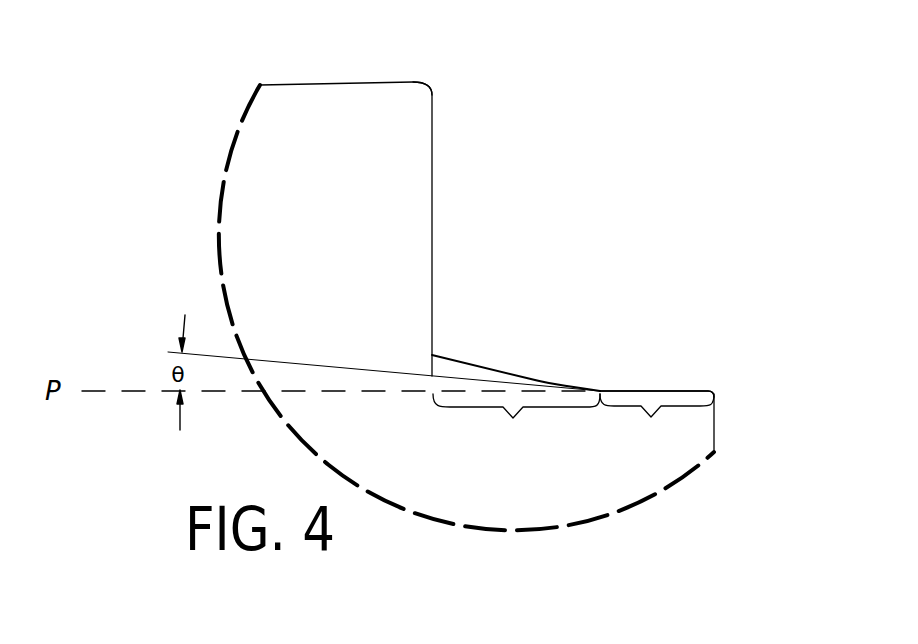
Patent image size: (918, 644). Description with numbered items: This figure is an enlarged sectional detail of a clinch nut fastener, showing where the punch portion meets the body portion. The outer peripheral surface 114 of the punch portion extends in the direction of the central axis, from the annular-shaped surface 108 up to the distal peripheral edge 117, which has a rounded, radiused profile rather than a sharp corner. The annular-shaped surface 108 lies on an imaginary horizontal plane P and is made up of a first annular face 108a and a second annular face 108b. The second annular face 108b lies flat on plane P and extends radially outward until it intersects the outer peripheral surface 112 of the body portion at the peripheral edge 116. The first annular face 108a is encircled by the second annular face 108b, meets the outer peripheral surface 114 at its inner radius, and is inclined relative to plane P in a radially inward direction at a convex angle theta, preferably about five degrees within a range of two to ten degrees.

The annular-shaped surface 108 is at (605, 358).
The first annular face 108a is at (516, 423).
The second annular face 108b is at (657, 423).
The outer peripheral surface of the body portion 112 is at (714, 437).
The outer peripheral surface of the punch portion 114 is at (443, 220).
The peripheral edge 116 is at (714, 391).
The distal peripheral edge 117 is at (433, 84).